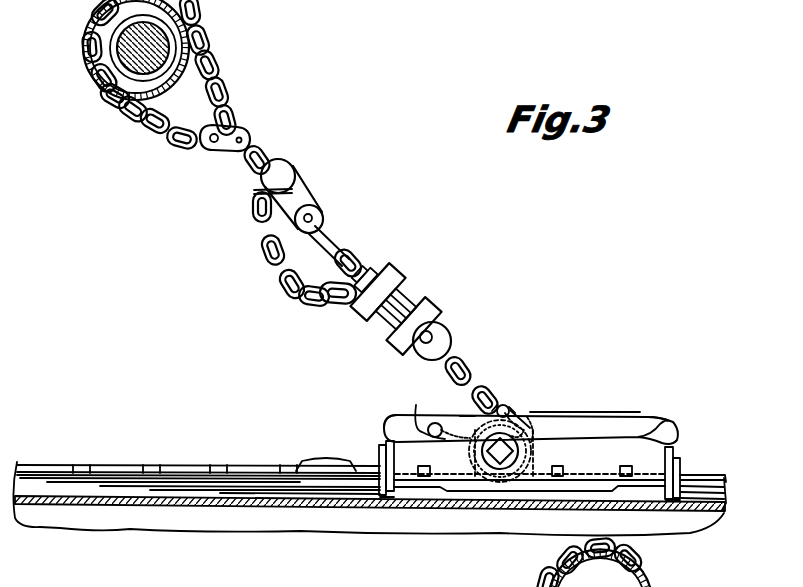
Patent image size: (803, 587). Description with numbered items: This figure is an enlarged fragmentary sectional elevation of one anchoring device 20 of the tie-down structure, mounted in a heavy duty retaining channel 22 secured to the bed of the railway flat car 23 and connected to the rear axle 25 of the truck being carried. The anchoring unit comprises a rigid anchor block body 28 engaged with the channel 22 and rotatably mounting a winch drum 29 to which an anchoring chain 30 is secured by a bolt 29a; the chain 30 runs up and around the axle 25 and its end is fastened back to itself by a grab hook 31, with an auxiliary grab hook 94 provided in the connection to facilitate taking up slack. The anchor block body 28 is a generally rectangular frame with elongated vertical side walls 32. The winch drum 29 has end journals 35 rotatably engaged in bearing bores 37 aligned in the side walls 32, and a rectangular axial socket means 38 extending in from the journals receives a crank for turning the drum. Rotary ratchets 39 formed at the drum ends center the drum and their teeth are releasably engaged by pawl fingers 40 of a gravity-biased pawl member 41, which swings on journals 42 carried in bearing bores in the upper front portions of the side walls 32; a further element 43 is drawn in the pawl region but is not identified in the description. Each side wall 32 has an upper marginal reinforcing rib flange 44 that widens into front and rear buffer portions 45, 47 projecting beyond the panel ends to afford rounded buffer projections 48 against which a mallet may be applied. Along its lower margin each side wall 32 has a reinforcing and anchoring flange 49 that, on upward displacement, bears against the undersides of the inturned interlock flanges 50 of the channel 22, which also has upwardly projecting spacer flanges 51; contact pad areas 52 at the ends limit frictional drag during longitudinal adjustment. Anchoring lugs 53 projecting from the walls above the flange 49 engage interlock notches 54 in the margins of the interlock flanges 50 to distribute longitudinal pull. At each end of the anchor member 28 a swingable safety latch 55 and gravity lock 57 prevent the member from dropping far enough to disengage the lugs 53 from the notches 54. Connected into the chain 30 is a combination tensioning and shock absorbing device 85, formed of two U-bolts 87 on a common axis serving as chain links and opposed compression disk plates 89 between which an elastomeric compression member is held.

The anchoring device 20 is at (596, 385).
The retaining channel 22 is at (335, 508).
The railway flat car 23 is at (245, 526).
The rear axle 25 is at (128, 63).
The anchor block body 28 is at (627, 417).
The winch drum 29 is at (530, 465).
The bolt 29a is at (510, 410).
The anchoring chain 30 is at (491, 405).
The grab hook 31 is at (206, 156).
The side wall 32 is at (597, 428).
The journal 35 is at (529, 456).
The bearing bore 37 is at (486, 453).
The rectangular axial socket means 38 is at (522, 448).
The rotary ratchet 39 is at (528, 419).
The pawl finger 40 is at (475, 480).
The pawl member 41 is at (447, 429).
The journal 42 is at (436, 422).
The pawl arm 43 is at (426, 421).
The reinforcing rib flange 44 is at (568, 415).
The front end buffer portion 45 is at (468, 418).
The rear end buffer portion 47 is at (661, 421).
The buffer projection 48 is at (387, 419).
The reinforcing and anchoring flange 49 is at (537, 492).
The interlock flange 50 is at (697, 474).
The spacer flange 51 is at (707, 482).
The contact pad area 52 is at (428, 484).
The anchoring lug 53 is at (424, 467).
The interlock notch 54 is at (293, 470).
The safety latch 55 is at (384, 509).
The gravity lock 57 is at (381, 451).
The combination tensioning and shock absorbing device 85 is at (418, 294).
The U-bolt 87 is at (370, 276).
The compression disk plate 89 is at (389, 277).
The auxiliary grab hook 94 is at (288, 178).